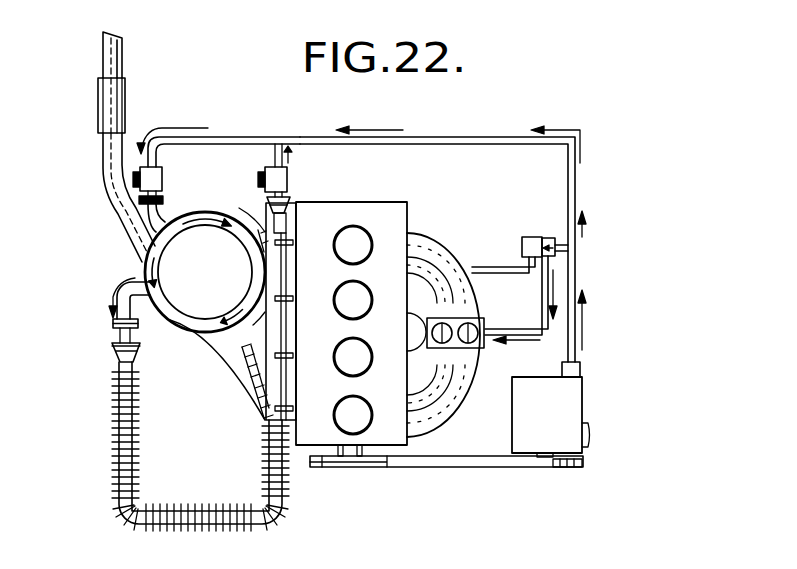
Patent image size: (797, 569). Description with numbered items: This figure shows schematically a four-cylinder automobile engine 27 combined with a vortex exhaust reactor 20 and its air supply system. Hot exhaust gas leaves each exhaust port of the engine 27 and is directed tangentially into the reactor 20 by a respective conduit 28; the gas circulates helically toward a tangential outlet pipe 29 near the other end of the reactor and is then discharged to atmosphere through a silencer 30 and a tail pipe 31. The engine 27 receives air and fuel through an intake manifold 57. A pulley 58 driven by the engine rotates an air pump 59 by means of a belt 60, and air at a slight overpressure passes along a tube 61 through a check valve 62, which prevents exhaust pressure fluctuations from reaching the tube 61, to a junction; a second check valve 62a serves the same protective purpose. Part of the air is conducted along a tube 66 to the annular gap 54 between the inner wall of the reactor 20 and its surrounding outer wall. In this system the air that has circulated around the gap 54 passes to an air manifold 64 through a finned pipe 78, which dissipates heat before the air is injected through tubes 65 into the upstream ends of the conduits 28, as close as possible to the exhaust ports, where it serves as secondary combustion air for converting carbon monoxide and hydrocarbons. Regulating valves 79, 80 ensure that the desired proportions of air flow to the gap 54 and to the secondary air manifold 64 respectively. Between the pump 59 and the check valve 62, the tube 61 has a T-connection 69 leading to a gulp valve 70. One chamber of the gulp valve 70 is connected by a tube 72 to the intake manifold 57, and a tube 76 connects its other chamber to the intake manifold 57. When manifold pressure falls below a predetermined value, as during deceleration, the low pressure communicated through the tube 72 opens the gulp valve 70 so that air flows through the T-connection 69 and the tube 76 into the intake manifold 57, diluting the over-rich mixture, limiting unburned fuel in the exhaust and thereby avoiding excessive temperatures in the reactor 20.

The particulate trap housing 20 is at (178, 335).
The engine 27 is at (417, 202).
The conduit 28 is at (262, 228).
The tangential outlet pipe 29 is at (110, 206).
The silencer 30 is at (115, 97).
The tail pipe 31 is at (113, 53).
The annular gap 54 is at (204, 330).
The intake manifold 57 is at (445, 404).
The pulley 58 is at (330, 466).
The air pump 59 is at (574, 398).
The belt 60 is at (455, 465).
The tube 61 is at (484, 137).
The check valve 62 is at (266, 200).
The check valve 62a is at (112, 351).
The air manifold 64 is at (272, 418).
The tube 65 is at (288, 238).
The tube 66 is at (231, 137).
The T-connection 69 is at (557, 237).
The gulp valve 70 is at (525, 228).
The tube 72 is at (494, 267).
The tube 76 is at (500, 348).
The finned pipe 78 is at (118, 430).
The regulating valve 79 is at (163, 178).
The regulating valve 80 is at (278, 181).